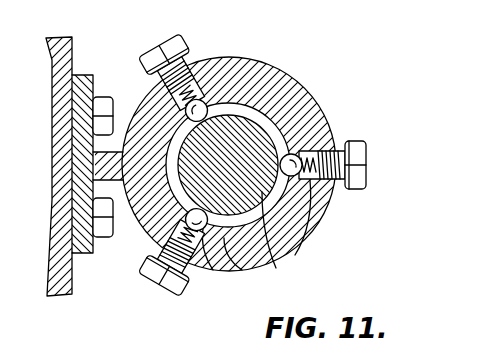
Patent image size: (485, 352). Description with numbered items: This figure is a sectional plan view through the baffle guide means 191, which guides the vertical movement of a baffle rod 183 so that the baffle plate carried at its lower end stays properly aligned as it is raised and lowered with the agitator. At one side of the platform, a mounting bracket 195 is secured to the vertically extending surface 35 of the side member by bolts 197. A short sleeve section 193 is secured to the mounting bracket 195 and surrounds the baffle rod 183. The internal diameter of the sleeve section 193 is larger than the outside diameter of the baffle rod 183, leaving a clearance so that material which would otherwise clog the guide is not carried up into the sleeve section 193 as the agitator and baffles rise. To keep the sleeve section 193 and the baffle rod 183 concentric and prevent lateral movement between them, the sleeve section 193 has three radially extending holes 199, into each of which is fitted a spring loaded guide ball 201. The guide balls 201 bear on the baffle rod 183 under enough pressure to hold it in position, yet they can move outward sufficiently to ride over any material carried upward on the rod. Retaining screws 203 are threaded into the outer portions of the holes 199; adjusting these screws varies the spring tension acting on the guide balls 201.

The vertically extending surface 35 is at (63, 296).
The baffle rod 183 is at (289, 249).
The baffle guide means 191 is at (313, 237).
The sleeve section 193 is at (273, 257).
The mounting bracket 195 is at (117, 184).
The bolt 197 is at (100, 97).
The radially extending hole 199 is at (187, 107).
The spring loaded guide ball 201 is at (208, 100).
The retaining screw 203 is at (177, 46).